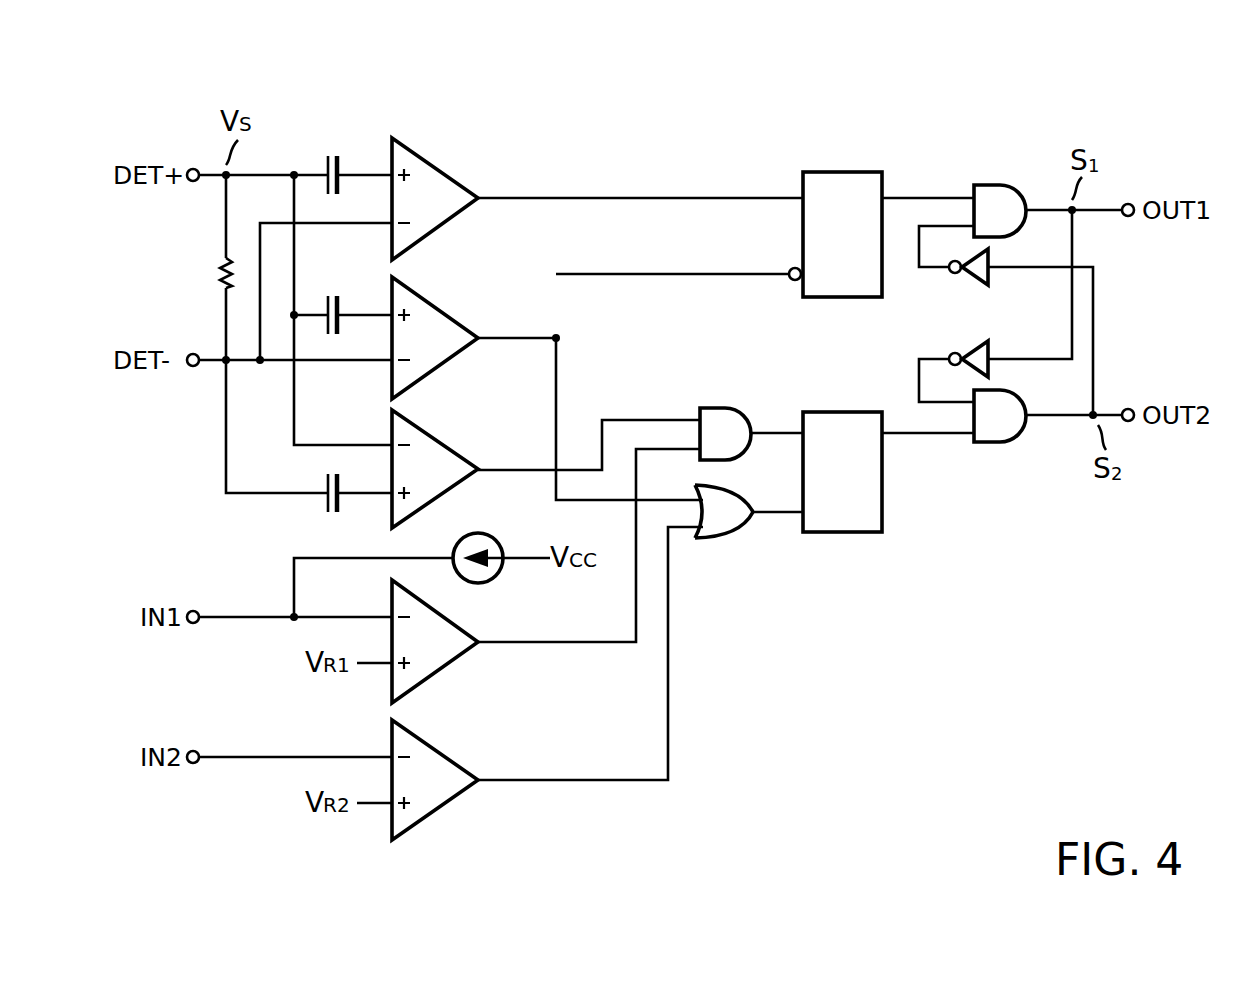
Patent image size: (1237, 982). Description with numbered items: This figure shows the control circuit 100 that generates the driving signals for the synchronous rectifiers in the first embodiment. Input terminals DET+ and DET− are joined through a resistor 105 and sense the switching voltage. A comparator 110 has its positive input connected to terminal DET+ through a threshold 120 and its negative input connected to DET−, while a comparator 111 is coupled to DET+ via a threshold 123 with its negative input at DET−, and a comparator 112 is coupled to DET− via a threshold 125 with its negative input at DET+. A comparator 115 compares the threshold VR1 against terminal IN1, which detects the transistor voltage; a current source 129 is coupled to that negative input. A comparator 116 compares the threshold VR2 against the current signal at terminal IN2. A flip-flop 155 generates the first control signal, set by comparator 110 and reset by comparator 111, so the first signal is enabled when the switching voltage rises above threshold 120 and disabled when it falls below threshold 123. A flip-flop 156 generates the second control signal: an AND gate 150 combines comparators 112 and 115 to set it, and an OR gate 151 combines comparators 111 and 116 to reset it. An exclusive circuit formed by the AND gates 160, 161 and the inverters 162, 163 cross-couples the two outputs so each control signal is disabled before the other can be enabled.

The control circuit 100 is at (1167, 100).
The resistor 105 is at (218, 275).
The comparator 110 is at (437, 160).
The comparator 111 is at (437, 298).
The comparator 112 is at (437, 432).
The comparator 115 is at (433, 680).
The comparator 116 is at (433, 815).
The threshold 120 is at (334, 150).
The threshold 123 is at (334, 290).
The threshold 125 is at (329, 512).
The current source 129 is at (497, 578).
The AND gate 150 is at (722, 405).
The OR gate 151 is at (725, 540).
The flip-flop 155 is at (845, 172).
The flip-flop 156 is at (850, 535).
The AND gate 160 is at (993, 183).
The AND gate 161 is at (990, 445).
The inverter 162 is at (975, 292).
The inverter 163 is at (993, 345).